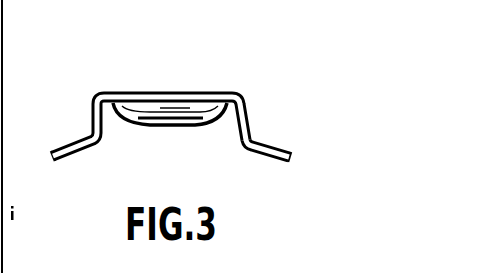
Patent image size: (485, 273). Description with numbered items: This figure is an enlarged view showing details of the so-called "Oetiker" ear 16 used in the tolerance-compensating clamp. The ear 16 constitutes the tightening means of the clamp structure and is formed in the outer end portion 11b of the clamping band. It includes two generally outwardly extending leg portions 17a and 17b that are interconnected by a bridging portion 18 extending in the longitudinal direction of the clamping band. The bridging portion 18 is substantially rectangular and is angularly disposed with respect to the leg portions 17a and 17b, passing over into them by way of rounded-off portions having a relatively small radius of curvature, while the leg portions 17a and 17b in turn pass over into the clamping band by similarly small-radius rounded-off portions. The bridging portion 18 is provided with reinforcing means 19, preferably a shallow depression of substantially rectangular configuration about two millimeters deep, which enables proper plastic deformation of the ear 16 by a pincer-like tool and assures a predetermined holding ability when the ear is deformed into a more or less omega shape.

The "Oetiker" ear 16 is at (204, 81).
The leg portion 17a is at (95, 112).
The leg portion 17b is at (246, 122).
The bridging portion 18 is at (178, 98).
The reinforcing means 19 is at (201, 126).
The outer end portion 11b is at (286, 168).